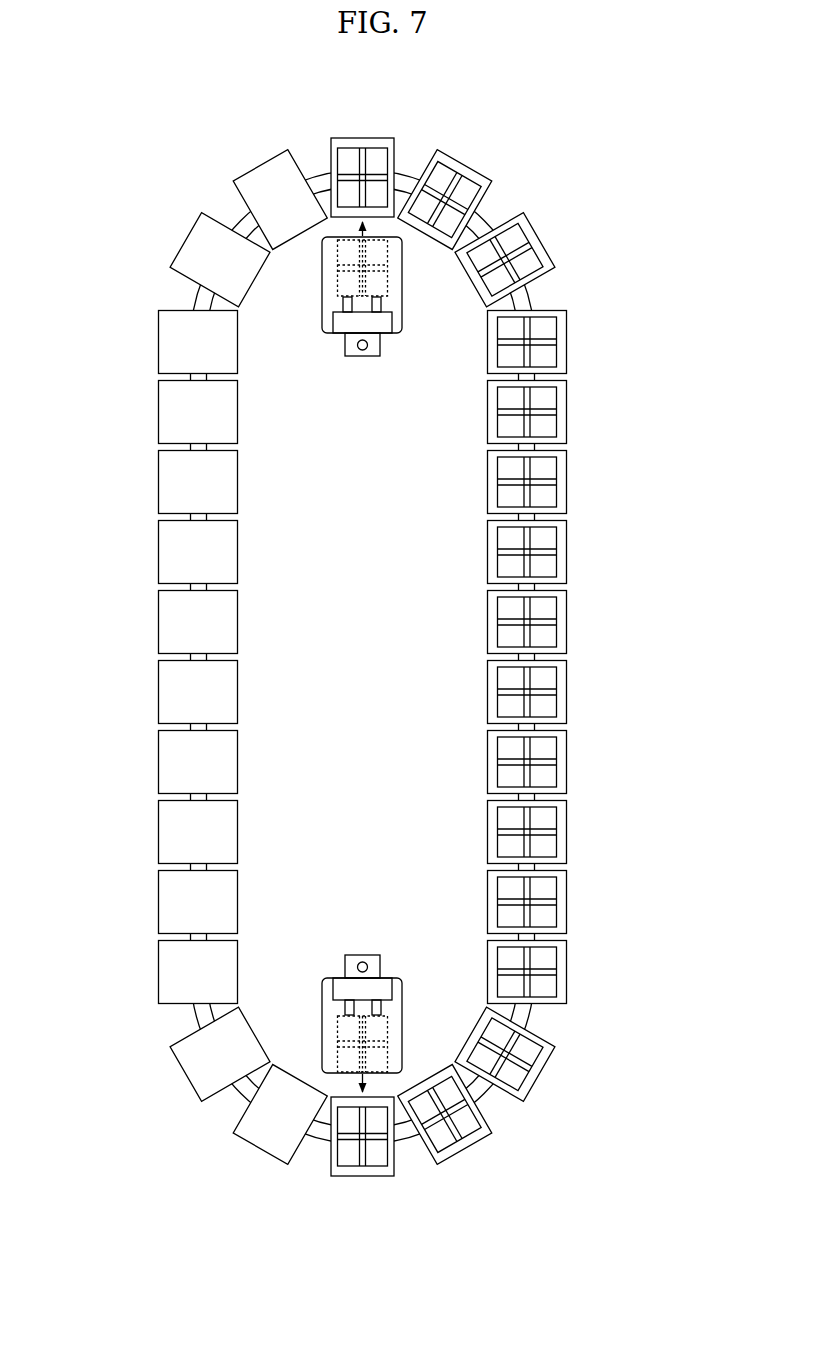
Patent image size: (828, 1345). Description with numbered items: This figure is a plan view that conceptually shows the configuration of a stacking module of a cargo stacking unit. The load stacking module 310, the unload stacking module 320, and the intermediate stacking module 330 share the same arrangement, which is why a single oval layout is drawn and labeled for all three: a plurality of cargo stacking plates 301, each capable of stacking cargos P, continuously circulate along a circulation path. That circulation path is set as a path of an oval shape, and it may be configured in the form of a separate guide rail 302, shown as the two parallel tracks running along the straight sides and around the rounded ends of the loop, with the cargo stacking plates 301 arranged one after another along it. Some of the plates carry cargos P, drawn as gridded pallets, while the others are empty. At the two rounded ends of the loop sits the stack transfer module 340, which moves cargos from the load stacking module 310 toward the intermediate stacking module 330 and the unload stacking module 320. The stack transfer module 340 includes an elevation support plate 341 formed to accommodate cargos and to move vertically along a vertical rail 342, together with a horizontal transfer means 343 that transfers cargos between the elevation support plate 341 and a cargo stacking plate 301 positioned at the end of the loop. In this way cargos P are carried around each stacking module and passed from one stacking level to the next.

The cargo stacking plate 301 is at (158, 411).
The guide rail 302 is at (525, 300).
The load stacking module 310 is at (432, 637).
The unload stacking module 320 is at (432, 637).
The intermediate stacking module 330 is at (617, 153).
The stack transfer module 340 is at (284, 991).
The elevation support plate 341 is at (335, 1023).
The vertical rail 342 is at (362, 958).
The horizontal transfer means 343 is at (340, 988).
The cargo P is at (552, 705).